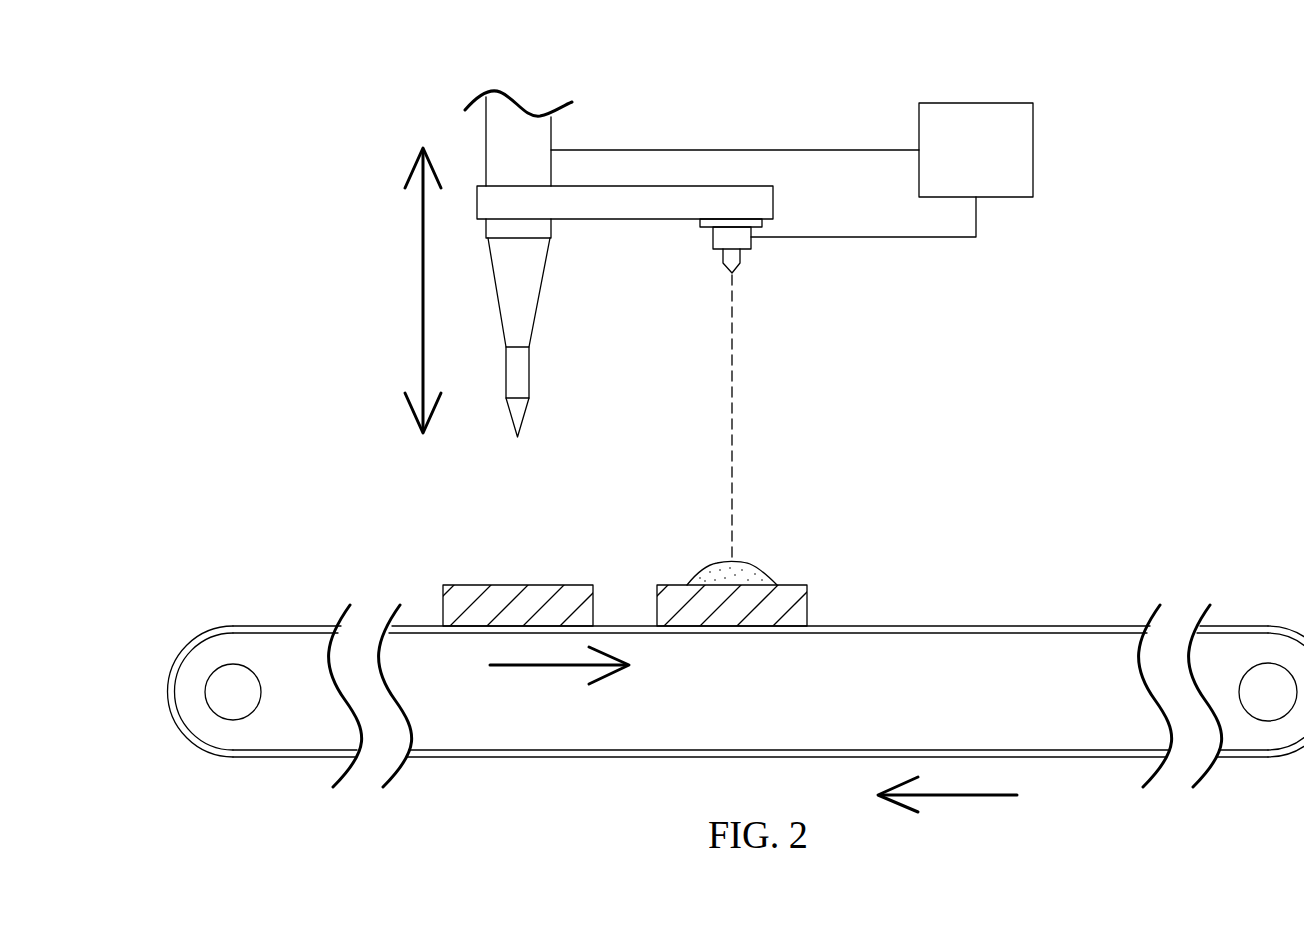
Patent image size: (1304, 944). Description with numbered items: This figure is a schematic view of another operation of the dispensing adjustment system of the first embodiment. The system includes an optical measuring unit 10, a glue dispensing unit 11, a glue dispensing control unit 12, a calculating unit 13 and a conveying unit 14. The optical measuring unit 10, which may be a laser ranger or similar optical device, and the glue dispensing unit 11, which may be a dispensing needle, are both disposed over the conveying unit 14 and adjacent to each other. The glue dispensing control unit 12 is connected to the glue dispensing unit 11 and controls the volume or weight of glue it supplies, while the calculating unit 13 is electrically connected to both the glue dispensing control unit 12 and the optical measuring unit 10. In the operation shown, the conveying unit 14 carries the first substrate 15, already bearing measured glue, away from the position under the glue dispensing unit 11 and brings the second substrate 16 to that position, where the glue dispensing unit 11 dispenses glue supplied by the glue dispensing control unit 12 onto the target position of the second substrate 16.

The optical measuring unit 10 is at (740, 256).
The glue dispensing unit 11 is at (523, 387).
The glue dispensing control unit 12 is at (551, 135).
The calculating unit 13 is at (1033, 168).
The conveying unit 14 is at (283, 626).
The first substrate 15 is at (807, 603).
The second substrate 16 is at (472, 585).